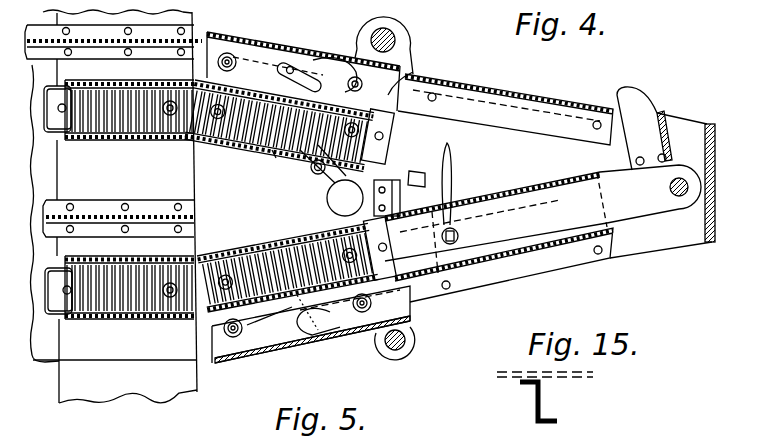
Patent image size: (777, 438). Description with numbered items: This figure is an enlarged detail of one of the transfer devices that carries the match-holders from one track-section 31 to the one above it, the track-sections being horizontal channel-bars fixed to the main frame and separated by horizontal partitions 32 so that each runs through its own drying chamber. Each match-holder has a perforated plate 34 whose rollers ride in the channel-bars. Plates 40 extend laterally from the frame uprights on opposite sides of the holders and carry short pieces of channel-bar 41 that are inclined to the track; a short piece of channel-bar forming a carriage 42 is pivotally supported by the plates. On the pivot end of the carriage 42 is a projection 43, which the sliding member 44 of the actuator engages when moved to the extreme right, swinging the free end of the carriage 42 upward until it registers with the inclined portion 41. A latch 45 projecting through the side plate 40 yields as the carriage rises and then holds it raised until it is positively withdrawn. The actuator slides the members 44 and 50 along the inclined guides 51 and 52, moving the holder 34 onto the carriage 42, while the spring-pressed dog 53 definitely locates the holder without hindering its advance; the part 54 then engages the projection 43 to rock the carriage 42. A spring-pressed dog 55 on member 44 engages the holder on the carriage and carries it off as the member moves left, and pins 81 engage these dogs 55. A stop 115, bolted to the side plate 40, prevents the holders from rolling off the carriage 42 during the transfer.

In FIG. 4, the track-section 31 is at (48, 97).
In FIG. 4, the partition 32 is at (182, 33).
In FIG. 4, the perforated plate 34 is at (393, 129).
In FIG. 4, the plate 40 is at (667, 240).
In FIG. 15, the plate 40 is at (577, 380).
In FIG. 4, the channel-bar piece 41 is at (371, 152).
In FIG. 4, the carriage 42 is at (543, 207).
In FIG. 4, the projection 43 is at (640, 108).
In FIG. 4, the sliding member 44 is at (257, 60).
In FIG. 4, the latch 45 is at (416, 169).
In FIG. 4, the sliding member 50 is at (350, 336).
In FIG. 4, the inclined guide 51 is at (518, 105).
In FIG. 4, the inclined guide 52 is at (543, 266).
In FIG. 4, the spring-pressed dog 53 is at (275, 332).
In FIG. 4, the part 54 is at (411, 38).
In FIG. 4, the spring-pressed dog 55 is at (307, 72).
In FIG. 4, the pin 81 is at (272, 156).
In FIG. 4, the stop 115 is at (396, 195).
In FIG. 15, the stop 115 is at (541, 397).